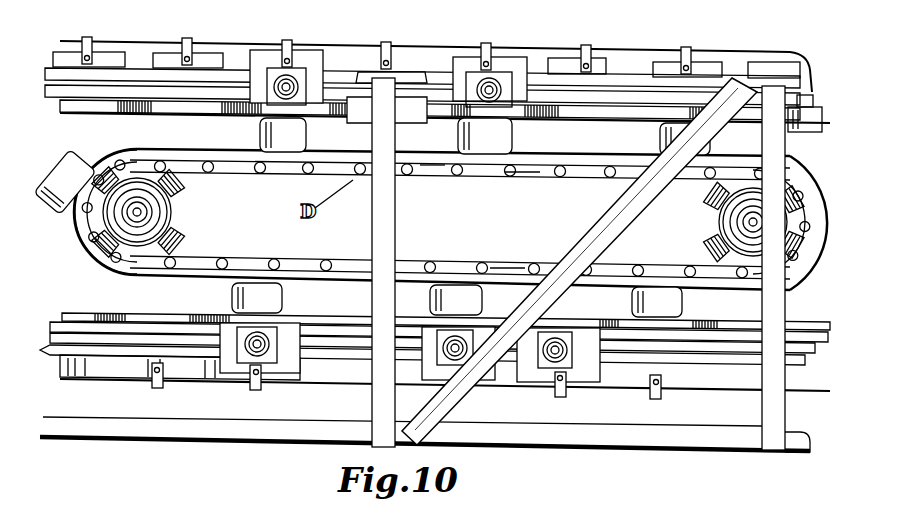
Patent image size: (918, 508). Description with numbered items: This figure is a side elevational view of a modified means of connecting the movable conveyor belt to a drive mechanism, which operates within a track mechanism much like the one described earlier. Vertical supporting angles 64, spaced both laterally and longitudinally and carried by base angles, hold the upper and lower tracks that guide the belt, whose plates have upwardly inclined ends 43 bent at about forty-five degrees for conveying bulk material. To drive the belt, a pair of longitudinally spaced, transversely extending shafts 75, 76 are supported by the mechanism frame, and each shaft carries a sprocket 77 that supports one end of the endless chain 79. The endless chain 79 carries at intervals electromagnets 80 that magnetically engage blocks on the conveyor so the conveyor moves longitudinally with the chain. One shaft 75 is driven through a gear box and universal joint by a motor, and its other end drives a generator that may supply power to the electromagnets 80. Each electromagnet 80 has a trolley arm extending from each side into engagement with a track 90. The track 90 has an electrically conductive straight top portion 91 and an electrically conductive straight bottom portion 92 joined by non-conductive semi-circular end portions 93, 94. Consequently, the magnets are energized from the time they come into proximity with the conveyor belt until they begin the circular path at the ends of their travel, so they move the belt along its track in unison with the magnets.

The upwardly inclined end 43 is at (303, 60).
The vertical supporting angle 64 is at (384, 230).
The shaft 75 is at (141, 212).
The shaft 76 is at (750, 223).
The sprocket 77 is at (192, 229).
The endless chain 79 is at (523, 175).
The electro magnet 80 is at (78, 160).
The track 90 is at (580, 158).
The electrically conductive straight top portion 91 is at (440, 160).
The electrically conductive straight bottom portion 92 is at (505, 282).
The non-conductive semi-circular end portion 93 is at (94, 266).
The non-conductive semi-circular end portion 94 is at (801, 177).